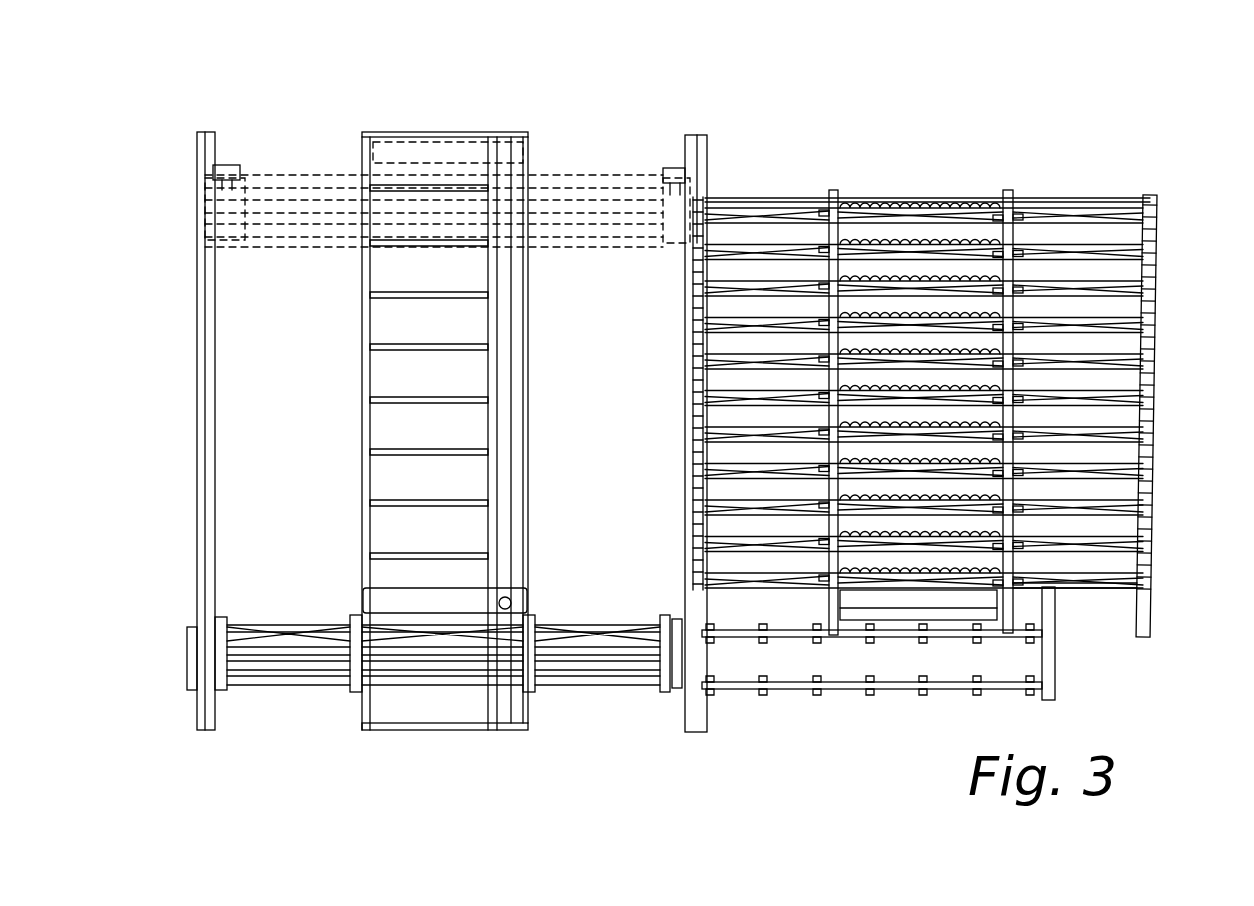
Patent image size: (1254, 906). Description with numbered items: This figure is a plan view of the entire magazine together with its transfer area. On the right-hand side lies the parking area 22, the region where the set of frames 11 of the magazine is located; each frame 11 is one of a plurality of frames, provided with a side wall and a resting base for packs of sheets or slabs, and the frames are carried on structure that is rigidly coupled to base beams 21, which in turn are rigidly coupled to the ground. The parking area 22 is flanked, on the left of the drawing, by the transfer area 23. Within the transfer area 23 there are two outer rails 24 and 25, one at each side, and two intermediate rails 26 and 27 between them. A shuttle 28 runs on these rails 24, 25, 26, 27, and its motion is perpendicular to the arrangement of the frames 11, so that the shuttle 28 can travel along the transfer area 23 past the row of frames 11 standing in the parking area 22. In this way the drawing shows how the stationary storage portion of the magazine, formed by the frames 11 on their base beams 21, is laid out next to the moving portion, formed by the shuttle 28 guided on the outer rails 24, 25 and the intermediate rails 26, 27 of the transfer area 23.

The frame 11 is at (1113, 212).
The base beam 21 is at (707, 163).
The parking area 22 is at (1152, 190).
The transfer area 23 is at (196, 120).
The outer rail 24 is at (685, 137).
The outer rail 25 is at (213, 130).
The intermediate rail 26 is at (365, 133).
The intermediate rail 27 is at (527, 133).
The shuttle 28 is at (288, 700).